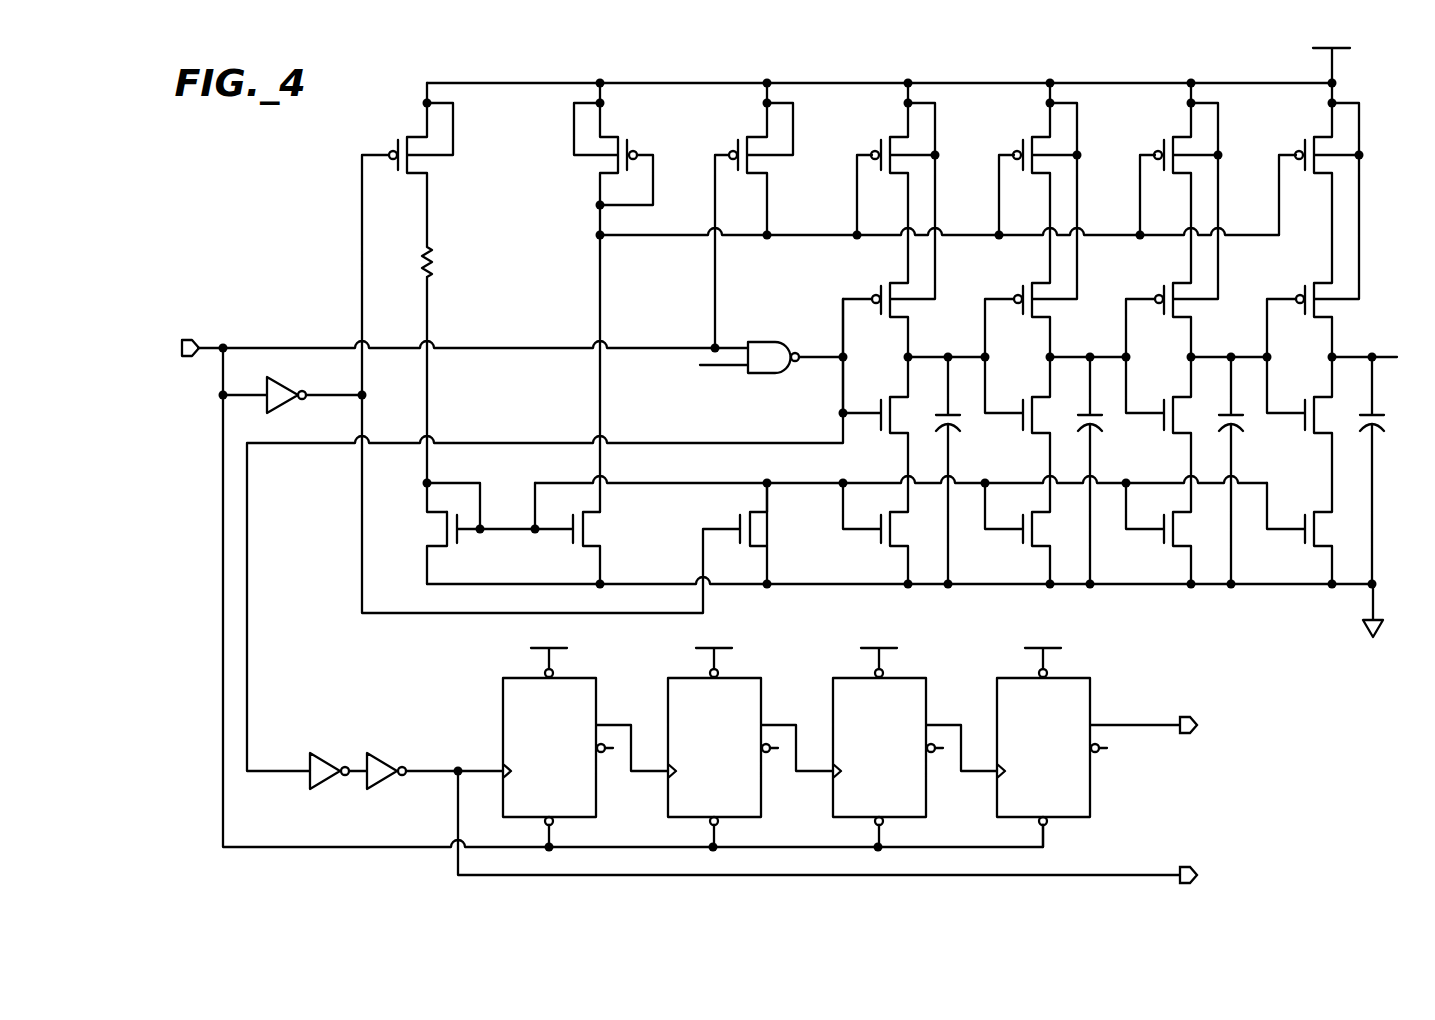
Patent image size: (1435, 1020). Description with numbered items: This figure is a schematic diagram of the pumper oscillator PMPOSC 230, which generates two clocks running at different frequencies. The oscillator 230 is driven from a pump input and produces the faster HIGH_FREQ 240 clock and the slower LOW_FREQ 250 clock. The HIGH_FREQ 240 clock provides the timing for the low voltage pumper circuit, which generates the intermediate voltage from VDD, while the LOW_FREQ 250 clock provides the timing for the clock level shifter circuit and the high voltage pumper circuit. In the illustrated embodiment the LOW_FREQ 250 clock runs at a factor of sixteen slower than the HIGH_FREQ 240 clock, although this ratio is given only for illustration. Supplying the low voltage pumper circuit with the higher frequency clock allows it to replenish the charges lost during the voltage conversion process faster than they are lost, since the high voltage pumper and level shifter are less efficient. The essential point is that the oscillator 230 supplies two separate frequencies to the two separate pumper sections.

The pumper oscillator PMPOSC_1 230 is at (243, 199).
The HIGH_FREQ clock 240 is at (1263, 876).
The LOW_FREQ clock 250 is at (1213, 726).